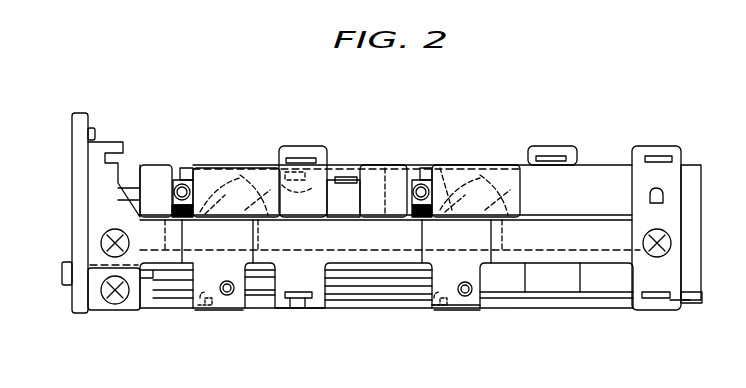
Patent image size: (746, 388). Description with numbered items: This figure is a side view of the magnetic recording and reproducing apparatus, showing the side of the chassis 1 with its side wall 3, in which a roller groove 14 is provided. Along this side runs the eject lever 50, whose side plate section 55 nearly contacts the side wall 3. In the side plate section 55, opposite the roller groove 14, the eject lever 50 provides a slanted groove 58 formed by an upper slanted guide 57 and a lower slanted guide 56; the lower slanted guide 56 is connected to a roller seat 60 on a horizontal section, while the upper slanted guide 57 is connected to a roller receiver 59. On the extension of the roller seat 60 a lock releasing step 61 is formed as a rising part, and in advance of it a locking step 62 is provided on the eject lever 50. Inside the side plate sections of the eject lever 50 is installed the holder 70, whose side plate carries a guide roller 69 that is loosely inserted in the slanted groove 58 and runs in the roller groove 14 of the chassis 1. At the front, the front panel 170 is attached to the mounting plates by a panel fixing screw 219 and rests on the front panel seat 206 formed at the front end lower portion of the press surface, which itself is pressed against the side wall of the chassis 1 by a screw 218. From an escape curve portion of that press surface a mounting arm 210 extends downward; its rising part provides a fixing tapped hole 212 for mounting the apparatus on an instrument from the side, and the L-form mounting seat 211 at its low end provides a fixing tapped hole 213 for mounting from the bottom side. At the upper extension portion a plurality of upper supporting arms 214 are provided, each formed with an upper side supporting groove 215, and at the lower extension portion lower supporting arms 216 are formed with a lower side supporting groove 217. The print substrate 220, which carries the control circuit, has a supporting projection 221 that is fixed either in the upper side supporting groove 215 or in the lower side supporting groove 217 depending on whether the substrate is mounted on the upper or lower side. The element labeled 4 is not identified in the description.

The chassis 1 is at (702, 262).
The side wall 3 is at (540, 150).
The hole 4 is at (703, 192).
The roller groove 14 is at (160, 180).
The eject lever 50 is at (372, 300).
The side plate section 55 is at (187, 168).
The lower slanted guide 56 is at (205, 168).
The upper slanted guide 57 is at (225, 170).
The slanted groove 58 is at (252, 170).
The roller receiver 59 is at (440, 168).
The roller seat 60 is at (385, 168).
The lock releasing step 61 is at (340, 180).
The locking step 62 is at (285, 172).
The guide roller 69 is at (176, 182).
The holder 70 is at (345, 177).
The front panel 170 is at (72, 122).
The front panel seat 206 is at (128, 310).
The mounting arm 210 is at (505, 310).
The L-form mounting seat 211 is at (220, 312).
The fixing tapped hole 212 is at (230, 296).
The fixing tapped hole 213 is at (200, 308).
The upper supporting arm 214 is at (302, 146).
The upper side supporting groove 215 is at (310, 158).
The lower supporting arm 216 is at (326, 308).
The lower side supporting groove 217 is at (303, 300).
The screw 218 is at (101, 243).
The panel fixing screw 219 is at (108, 304).
The print substrate 220 is at (510, 300).
The supporting projection 221 is at (280, 310).